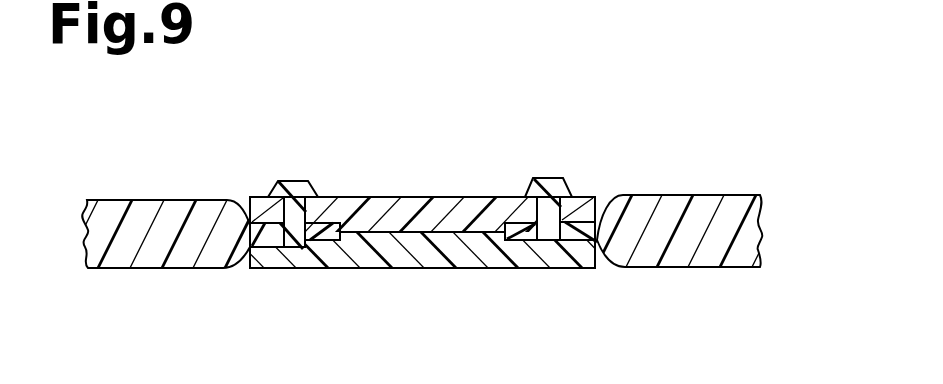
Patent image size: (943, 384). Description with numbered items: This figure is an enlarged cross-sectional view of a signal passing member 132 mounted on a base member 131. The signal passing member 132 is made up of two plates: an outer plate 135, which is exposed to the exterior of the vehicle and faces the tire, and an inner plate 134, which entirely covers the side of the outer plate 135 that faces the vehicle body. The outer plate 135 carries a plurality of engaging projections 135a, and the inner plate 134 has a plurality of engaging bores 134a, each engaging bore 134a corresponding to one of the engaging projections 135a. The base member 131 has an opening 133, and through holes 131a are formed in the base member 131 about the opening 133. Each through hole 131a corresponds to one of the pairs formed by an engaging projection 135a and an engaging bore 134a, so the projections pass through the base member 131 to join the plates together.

The base member 131 is at (145, 200).
The through hole 131a is at (282, 243).
The signal passing member 132 is at (493, 120).
The opening 133 is at (345, 255).
The inner plate 134 is at (400, 197).
The engaging bore 134a is at (303, 235).
The outer plate 135 is at (450, 205).
The engaging projection 135a is at (275, 197).